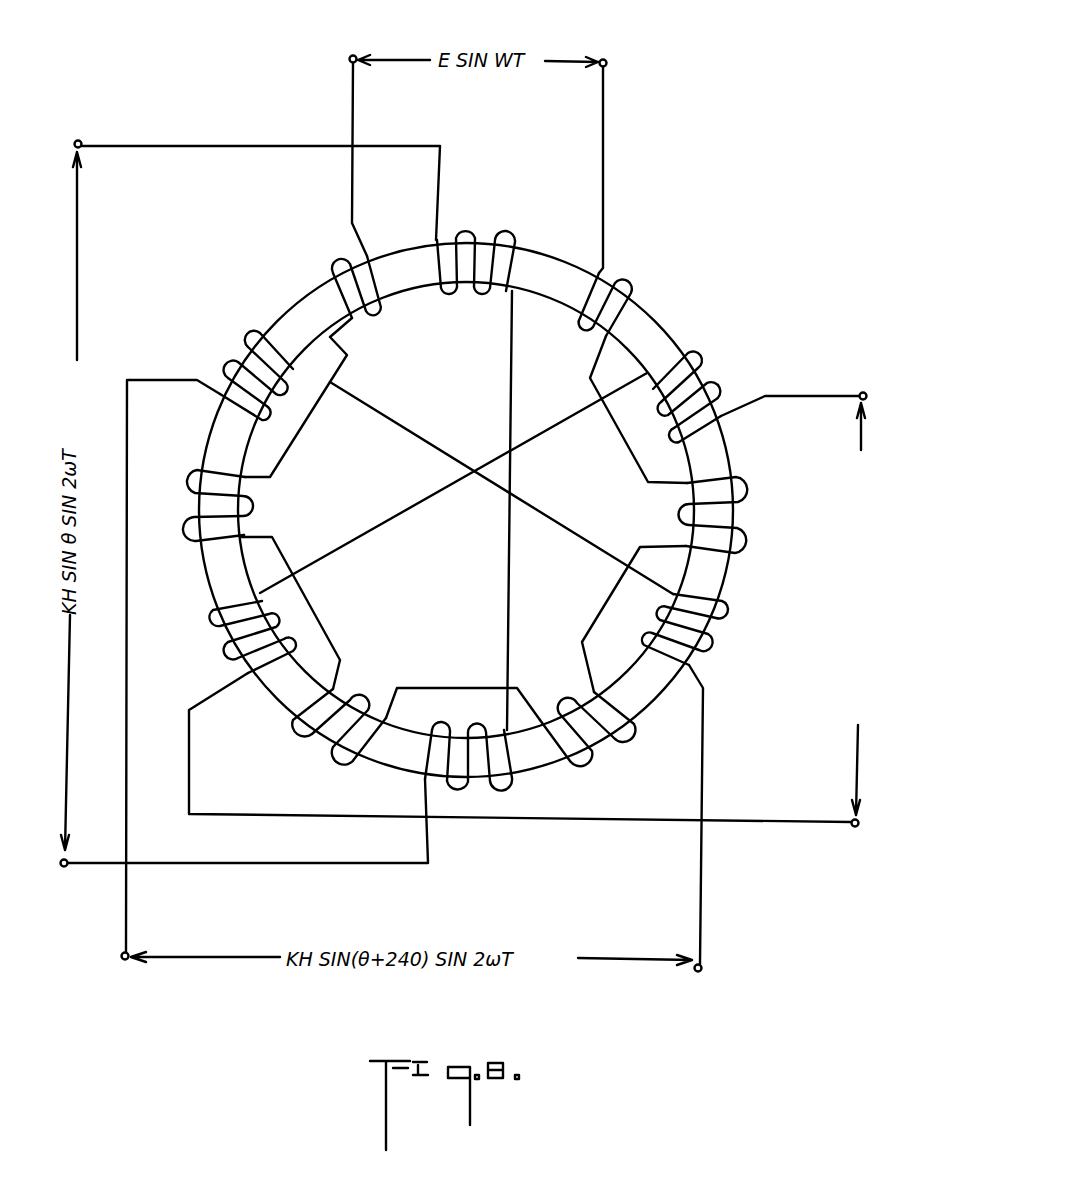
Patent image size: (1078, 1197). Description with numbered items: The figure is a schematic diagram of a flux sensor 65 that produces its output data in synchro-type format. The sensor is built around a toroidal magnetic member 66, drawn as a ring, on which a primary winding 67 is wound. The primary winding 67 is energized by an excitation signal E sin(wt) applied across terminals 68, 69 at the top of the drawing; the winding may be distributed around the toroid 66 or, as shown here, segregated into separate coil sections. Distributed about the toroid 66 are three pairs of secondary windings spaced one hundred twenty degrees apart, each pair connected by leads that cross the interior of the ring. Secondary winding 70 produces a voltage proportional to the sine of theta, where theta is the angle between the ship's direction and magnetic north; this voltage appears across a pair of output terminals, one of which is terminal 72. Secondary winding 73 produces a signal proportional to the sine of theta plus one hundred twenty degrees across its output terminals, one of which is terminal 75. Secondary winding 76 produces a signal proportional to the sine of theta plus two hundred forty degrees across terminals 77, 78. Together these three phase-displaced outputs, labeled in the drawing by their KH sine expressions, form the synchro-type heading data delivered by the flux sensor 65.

The flux sensor 65 is at (678, 309).
The toroidal magnetic member 66 is at (722, 582).
The primary winding 67 is at (378, 322).
The terminal 68 is at (351, 55).
The terminal 69 is at (608, 60).
The secondary winding 70 is at (482, 298).
The terminal 72 is at (62, 870).
The secondary winding 73 is at (214, 642).
The terminal 75 is at (860, 828).
The secondary winding 76 is at (247, 345).
The terminal 77 is at (124, 962).
The terminal 78 is at (704, 968).